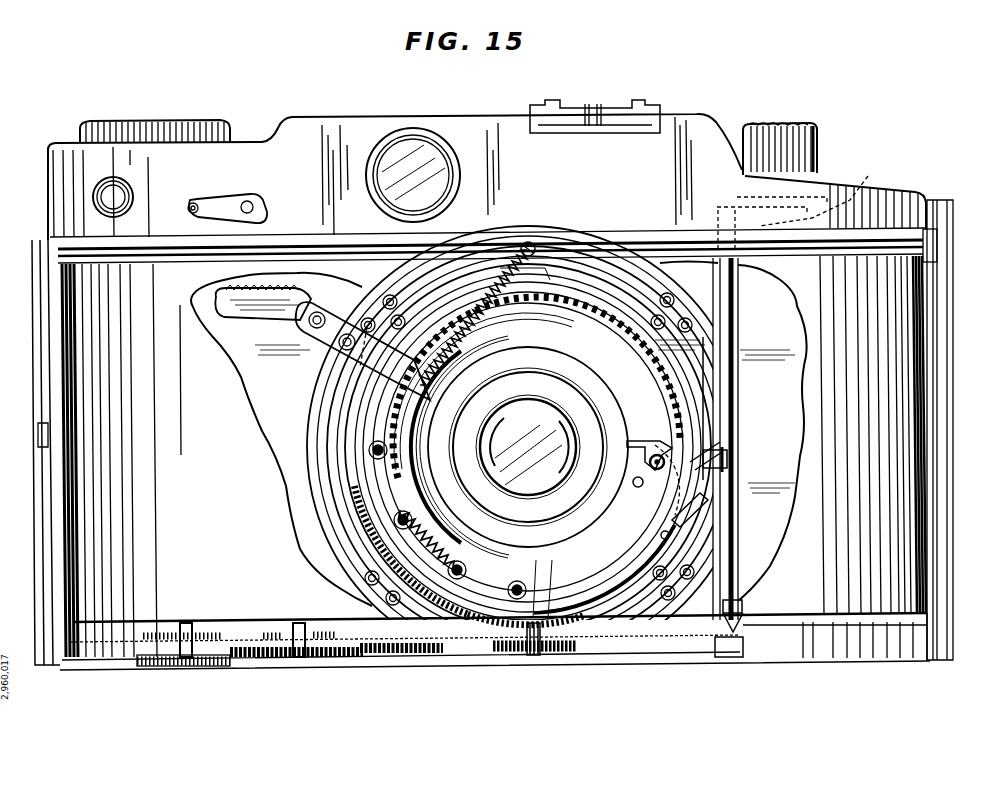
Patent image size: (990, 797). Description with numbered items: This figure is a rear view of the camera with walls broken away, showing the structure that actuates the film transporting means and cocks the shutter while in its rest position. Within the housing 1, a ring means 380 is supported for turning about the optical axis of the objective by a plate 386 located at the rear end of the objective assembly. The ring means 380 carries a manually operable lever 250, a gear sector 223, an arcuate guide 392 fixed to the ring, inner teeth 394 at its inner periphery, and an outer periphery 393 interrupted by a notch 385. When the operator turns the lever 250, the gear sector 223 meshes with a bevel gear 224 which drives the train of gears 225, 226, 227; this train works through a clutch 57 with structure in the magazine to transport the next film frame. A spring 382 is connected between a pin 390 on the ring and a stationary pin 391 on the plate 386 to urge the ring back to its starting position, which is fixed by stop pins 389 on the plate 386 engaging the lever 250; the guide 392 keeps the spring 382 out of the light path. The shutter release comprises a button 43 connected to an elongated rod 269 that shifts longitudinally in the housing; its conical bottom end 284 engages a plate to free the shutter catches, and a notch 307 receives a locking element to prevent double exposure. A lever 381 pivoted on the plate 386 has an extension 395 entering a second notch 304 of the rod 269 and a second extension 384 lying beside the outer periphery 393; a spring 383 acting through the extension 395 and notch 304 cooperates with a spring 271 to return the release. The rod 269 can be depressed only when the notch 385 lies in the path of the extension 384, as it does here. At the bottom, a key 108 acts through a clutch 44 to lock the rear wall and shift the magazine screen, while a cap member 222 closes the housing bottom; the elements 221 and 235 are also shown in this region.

The housing 1 is at (930, 256).
The manually engageable button 43 is at (817, 139).
The spring 271 is at (806, 203).
The elongated rod 269 is at (731, 305).
The manually operable lever 250 is at (262, 307).
The stop pins 389 is at (362, 317).
The stationary pin 391 is at (524, 243).
The plate 386 is at (587, 256).
The arcuate guide 392 is at (503, 340).
The inner teeth 394 is at (652, 347).
The ring means 380 is at (556, 568).
The pin 390 is at (459, 566).
The outer periphery 393 is at (614, 591).
The spring 382 is at (425, 530).
The gear sector 223 is at (357, 530).
The bevel gear 224 is at (573, 630).
The lever 381 is at (657, 440).
The spring 383 is at (637, 480).
The extension 395 is at (718, 440).
The second notch 304 is at (737, 453).
The second extension 384 is at (705, 514).
The notch 385 is at (663, 534).
The drive shaft 221 is at (640, 642).
The manually operable lock actuating member 108 is at (181, 663).
The gear 225 is at (263, 657).
The gear 226 is at (410, 651).
The gear 227 is at (513, 654).
The clutch 44 is at (213, 634).
The gear 235 is at (303, 633).
The clutch 57 is at (337, 636).
The bottom end 284 is at (718, 657).
The notch 307 is at (743, 608).
The cap member 222 is at (830, 657).